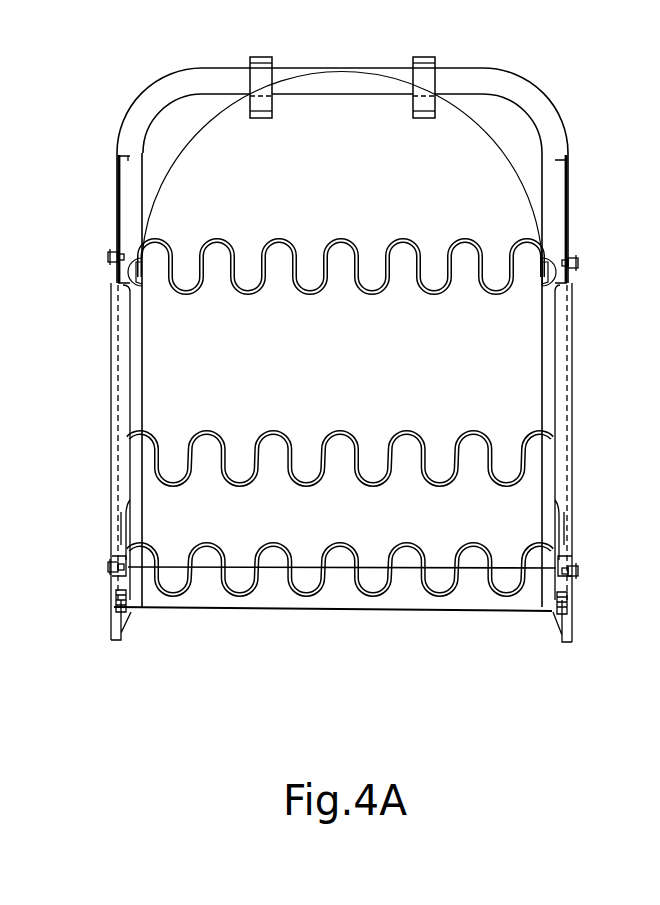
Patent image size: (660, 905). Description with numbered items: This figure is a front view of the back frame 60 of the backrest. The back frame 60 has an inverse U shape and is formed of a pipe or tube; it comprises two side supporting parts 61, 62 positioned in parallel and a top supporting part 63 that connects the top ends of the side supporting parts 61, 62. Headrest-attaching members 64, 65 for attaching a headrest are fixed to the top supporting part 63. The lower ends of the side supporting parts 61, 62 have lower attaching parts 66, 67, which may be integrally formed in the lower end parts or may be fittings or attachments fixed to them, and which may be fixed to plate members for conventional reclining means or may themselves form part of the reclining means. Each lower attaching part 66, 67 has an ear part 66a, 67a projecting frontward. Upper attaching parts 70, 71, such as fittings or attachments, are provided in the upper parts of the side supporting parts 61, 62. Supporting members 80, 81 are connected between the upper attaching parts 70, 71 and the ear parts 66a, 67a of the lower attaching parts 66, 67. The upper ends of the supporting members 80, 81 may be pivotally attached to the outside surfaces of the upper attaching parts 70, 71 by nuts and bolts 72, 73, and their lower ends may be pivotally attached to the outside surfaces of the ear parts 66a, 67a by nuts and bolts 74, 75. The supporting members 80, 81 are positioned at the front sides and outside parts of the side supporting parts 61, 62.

The back frame 60 is at (360, 311).
The side supporting part 61 is at (542, 392).
The side supporting part 62 is at (140, 400).
The top supporting part 63 is at (318, 78).
The headrest-attaching member 64 is at (427, 78).
The headrest-attaching member 65 is at (265, 82).
The lower attaching part 66 is at (570, 517).
The ear part 66a is at (572, 562).
The lower attaching part 67 is at (117, 522).
The ear part 67a is at (112, 565).
The upper attaching part 70 is at (568, 195).
The upper attaching part 71 is at (117, 193).
The nut and bolt 72 is at (578, 264).
The nut and bolt 73 is at (108, 258).
The nut and bolt 74 is at (578, 572).
The nut and bolt 75 is at (105, 567).
The supporting member 80 is at (562, 367).
The supporting member 81 is at (122, 418).